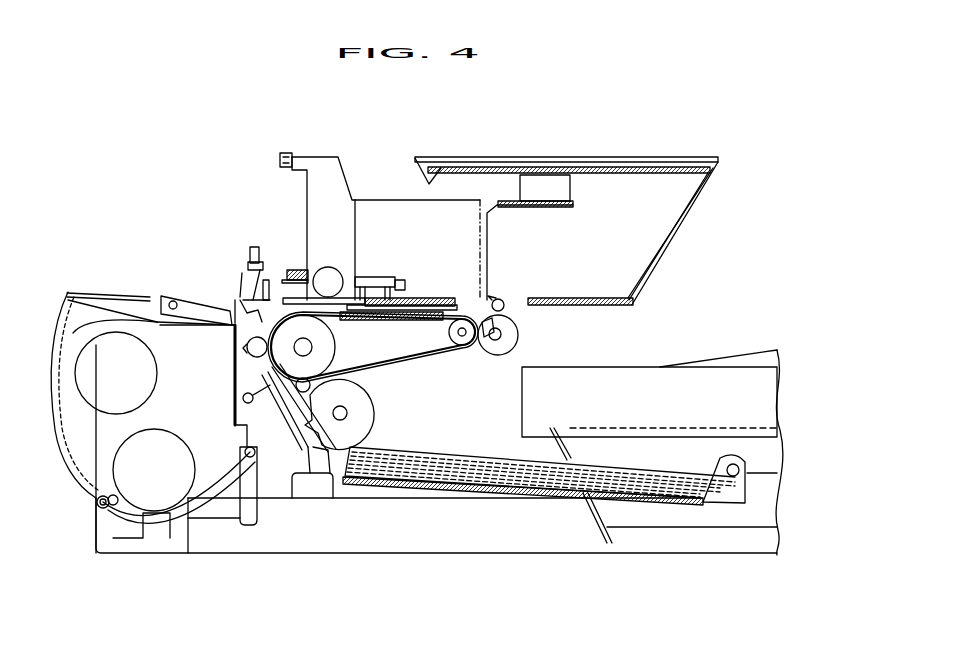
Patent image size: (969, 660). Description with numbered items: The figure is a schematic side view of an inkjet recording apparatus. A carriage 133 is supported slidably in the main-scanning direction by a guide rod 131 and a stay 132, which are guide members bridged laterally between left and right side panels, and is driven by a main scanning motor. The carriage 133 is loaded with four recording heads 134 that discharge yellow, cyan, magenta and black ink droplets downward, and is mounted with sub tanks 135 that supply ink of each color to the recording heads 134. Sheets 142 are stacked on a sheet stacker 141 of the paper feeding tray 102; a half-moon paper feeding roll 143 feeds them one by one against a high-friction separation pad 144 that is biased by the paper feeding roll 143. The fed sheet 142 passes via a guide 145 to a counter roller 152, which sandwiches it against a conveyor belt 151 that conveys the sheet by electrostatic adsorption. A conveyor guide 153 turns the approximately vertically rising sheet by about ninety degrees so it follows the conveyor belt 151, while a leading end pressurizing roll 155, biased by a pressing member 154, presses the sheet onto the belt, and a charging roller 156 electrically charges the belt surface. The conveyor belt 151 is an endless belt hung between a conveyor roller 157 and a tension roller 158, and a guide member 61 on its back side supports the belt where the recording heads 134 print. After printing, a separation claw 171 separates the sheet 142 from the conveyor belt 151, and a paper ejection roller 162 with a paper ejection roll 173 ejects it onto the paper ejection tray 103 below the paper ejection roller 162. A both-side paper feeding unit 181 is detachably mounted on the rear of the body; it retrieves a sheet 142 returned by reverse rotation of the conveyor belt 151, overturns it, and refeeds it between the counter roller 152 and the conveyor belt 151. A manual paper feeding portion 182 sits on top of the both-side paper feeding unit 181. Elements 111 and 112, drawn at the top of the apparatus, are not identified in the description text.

The paper feeding tray 102 is at (657, 540).
The paper ejection tray 103 is at (700, 388).
The hopper top plate 111 is at (625, 160).
The hopper side wall 112 is at (685, 218).
The guide rod 131 is at (322, 278).
The stay 132 is at (283, 153).
The carriage 133 is at (345, 190).
The recording heads 134 is at (445, 300).
The sub tanks 135 is at (430, 215).
The sheet stacker 141 is at (438, 480).
The sheets 142 is at (487, 470).
The paper feeding roll 143 is at (327, 422).
The separation pad 144 is at (308, 447).
The guide 145 is at (273, 367).
The conveyor belt 151 is at (420, 353).
The counter roller 152 is at (196, 300).
The conveyor guide 153 is at (243, 295).
The pressing member 154 is at (240, 262).
The leading end pressurizing roll 155 is at (280, 267).
The charging roller 156 is at (273, 390).
The conveyor roller 157 is at (335, 346).
The tension roller 158 is at (449, 334).
The guide member 61 is at (390, 320).
The paper ejection roller 162 is at (518, 333).
The separation claw 171 is at (484, 352).
The paper ejection roll 173 is at (503, 300).
The both-side paper feeding unit 181 is at (69, 296).
The manual paper feeding portion 182 is at (165, 285).